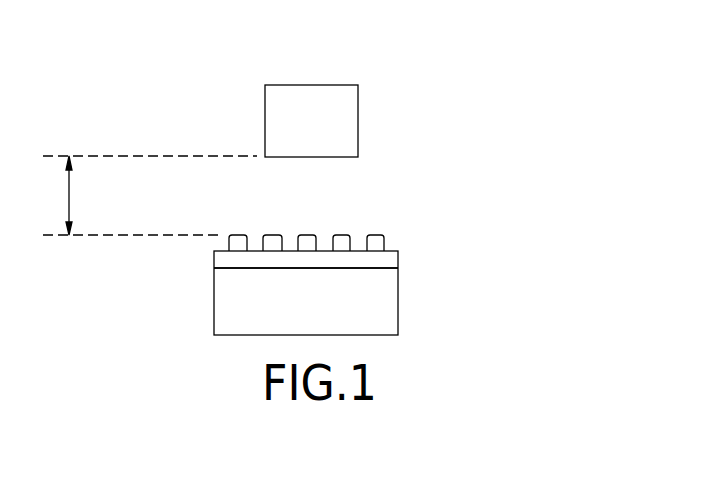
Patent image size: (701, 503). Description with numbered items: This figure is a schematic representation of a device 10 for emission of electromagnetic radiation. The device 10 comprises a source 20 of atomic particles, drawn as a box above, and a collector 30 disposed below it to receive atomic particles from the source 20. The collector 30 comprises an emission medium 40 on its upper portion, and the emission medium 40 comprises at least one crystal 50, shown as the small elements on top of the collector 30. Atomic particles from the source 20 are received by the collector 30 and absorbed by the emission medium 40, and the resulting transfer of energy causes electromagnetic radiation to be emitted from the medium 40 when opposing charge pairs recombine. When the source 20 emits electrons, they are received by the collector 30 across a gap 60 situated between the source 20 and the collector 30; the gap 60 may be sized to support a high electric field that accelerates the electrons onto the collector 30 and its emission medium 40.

The device 10 is at (438, 115).
The source 20 is at (311, 121).
The collector 30 is at (468, 230).
The emission medium 40 is at (410, 232).
The crystal 50 is at (264, 235).
The gap 60 is at (150, 195).